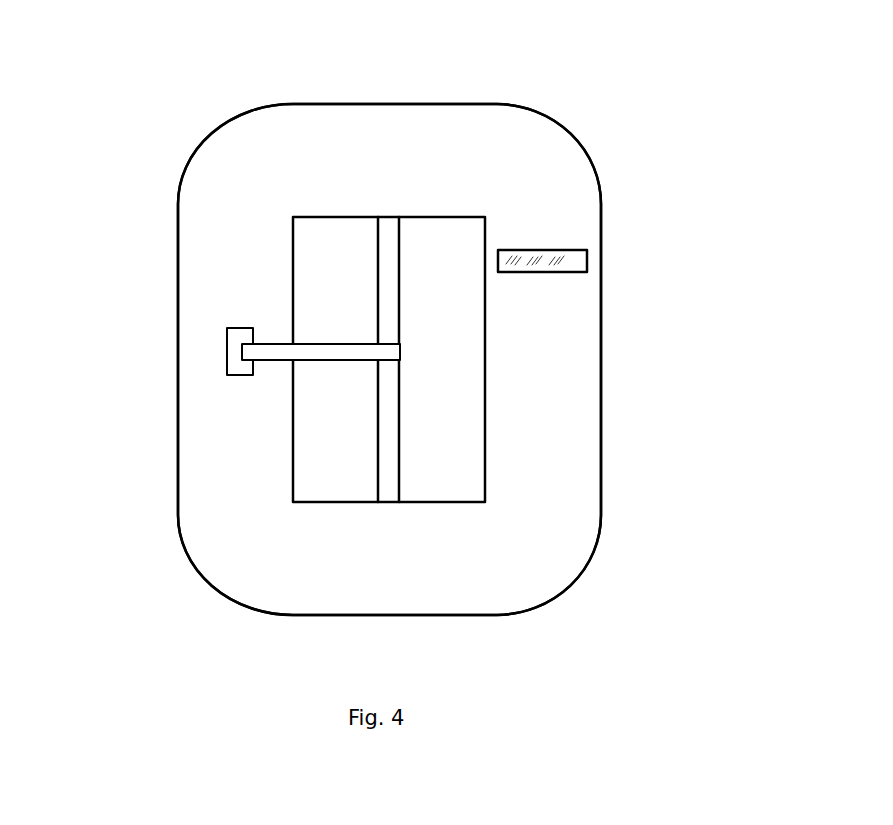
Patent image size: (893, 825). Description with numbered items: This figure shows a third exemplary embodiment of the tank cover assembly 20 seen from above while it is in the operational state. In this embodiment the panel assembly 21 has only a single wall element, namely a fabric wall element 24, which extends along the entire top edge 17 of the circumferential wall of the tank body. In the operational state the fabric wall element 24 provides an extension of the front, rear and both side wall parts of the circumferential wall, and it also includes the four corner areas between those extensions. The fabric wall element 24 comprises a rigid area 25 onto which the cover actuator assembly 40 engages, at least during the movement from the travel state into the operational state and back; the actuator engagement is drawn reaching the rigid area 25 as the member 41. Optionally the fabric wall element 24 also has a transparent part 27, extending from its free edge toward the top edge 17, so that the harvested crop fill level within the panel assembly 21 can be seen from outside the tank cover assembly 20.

The tank cover assembly 20 is at (167, 117).
The panel assembly 21 is at (587, 142).
The fabric wall element 24 is at (212, 278).
The top edge 17 is at (485, 388).
The cover actuator assembly 40 is at (387, 302).
The actuator bar 41 is at (323, 355).
The rigid area 25 is at (243, 365).
The transparent part 27 is at (572, 261).